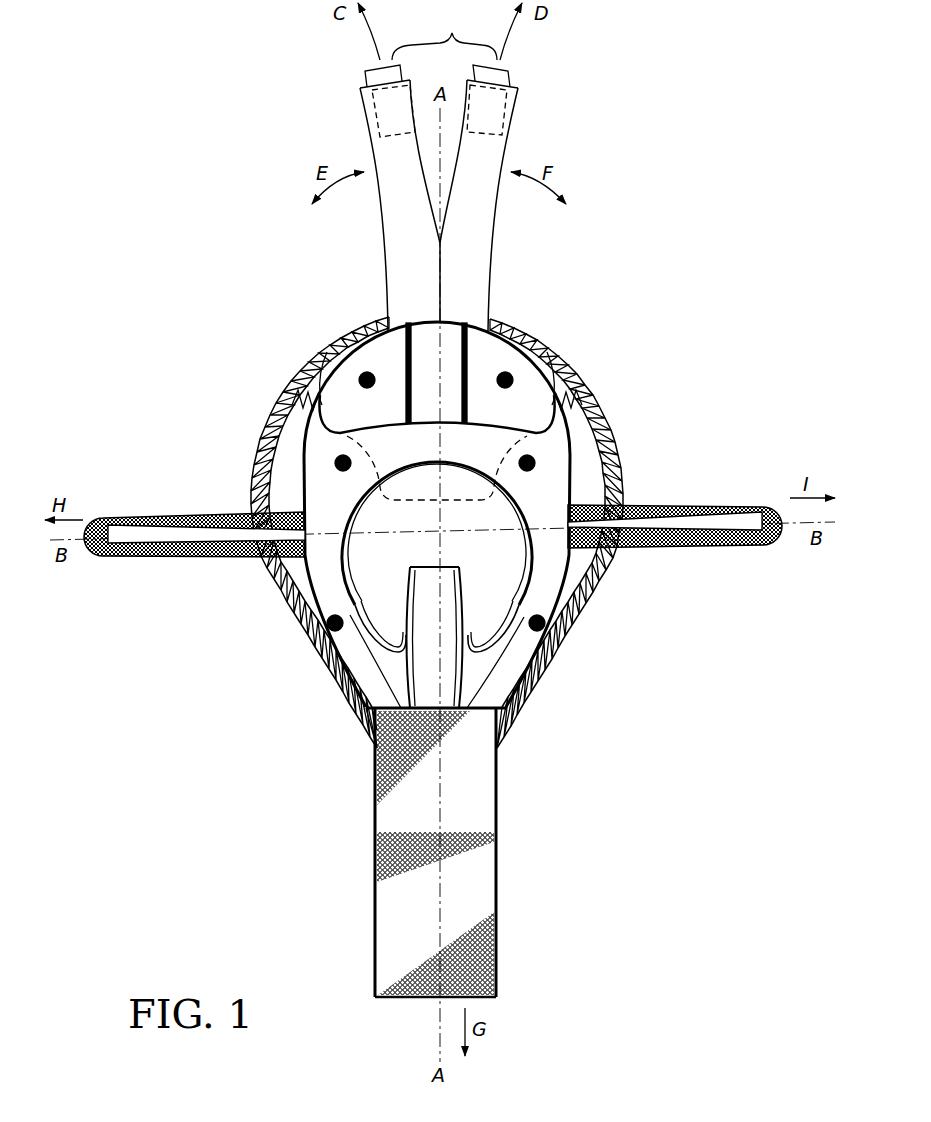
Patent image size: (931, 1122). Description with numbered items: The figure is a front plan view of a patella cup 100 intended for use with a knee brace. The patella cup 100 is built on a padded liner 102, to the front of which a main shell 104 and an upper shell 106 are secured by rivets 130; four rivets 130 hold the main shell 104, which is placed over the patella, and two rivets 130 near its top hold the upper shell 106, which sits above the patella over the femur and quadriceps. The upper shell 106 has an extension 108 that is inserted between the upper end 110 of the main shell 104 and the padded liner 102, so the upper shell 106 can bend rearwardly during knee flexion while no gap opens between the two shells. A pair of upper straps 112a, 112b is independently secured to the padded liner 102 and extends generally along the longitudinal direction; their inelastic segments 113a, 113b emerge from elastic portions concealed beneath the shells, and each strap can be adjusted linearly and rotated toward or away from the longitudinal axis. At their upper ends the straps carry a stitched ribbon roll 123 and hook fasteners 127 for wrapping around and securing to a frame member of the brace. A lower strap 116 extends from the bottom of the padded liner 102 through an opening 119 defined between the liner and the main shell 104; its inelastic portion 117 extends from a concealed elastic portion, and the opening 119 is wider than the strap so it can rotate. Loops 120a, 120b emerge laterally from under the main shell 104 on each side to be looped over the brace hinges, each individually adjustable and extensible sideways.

The patella cup 100 is at (186, 296).
The padded liner 102 is at (577, 470).
The main shell 104 is at (506, 673).
The upper shell 106 is at (497, 362).
The extension 108 is at (433, 502).
The upper end 110 is at (357, 430).
The upper strap 112a is at (384, 242).
The upper strap 112b is at (497, 248).
The inelastic segment 113a is at (392, 217).
The inelastic segment 113b is at (483, 217).
The lower strap 116 is at (500, 902).
The inelastic portion 117 is at (477, 806).
The opening 119 is at (367, 740).
The loop 120a is at (150, 508).
The loop 120b is at (703, 500).
The ribbon roll 123 is at (444, 35).
The hook fasteners 127 is at (392, 110).
The rivets 130 is at (497, 379).